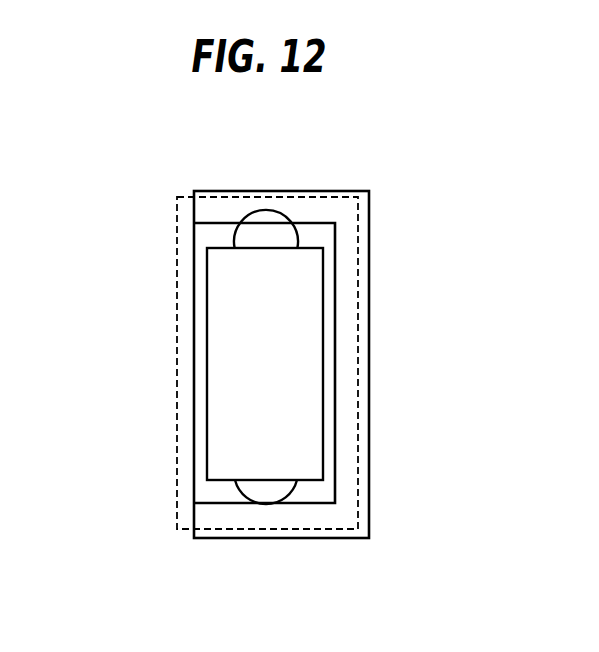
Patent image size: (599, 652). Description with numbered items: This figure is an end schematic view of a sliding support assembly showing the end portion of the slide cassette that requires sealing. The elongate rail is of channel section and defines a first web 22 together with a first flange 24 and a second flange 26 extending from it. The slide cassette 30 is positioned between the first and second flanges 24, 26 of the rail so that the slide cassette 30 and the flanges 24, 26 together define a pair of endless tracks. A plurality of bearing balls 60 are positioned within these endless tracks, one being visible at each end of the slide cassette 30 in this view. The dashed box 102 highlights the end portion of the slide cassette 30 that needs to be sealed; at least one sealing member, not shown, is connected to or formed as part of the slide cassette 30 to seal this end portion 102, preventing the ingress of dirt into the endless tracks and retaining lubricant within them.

The boxes highlighting end portions of the slide cassette 102 is at (175, 285).
The first web 22 is at (345, 417).
The first flange 24 is at (310, 517).
The second flange 26 is at (213, 203).
The slide cassette 30 is at (308, 293).
The bearing balls 60 is at (265, 217).